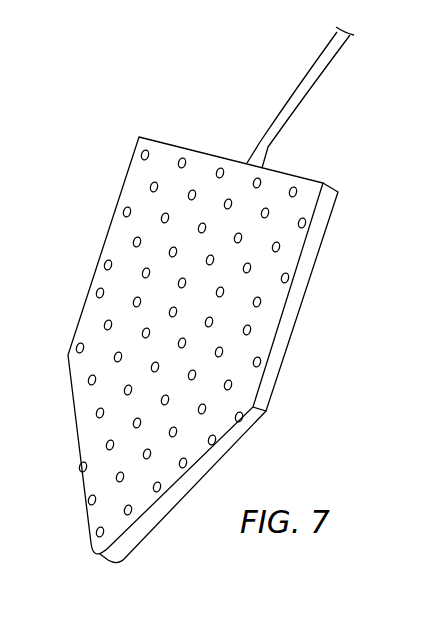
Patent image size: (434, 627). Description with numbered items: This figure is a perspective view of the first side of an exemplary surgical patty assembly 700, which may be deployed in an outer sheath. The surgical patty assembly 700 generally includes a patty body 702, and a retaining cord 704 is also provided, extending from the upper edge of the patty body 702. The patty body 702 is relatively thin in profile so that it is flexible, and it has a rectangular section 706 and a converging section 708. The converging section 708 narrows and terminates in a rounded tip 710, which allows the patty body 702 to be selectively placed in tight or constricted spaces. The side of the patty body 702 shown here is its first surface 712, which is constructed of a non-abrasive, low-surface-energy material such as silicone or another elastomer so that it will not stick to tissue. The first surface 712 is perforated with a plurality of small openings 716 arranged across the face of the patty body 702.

The surgical patty assembly 700 is at (289, 409).
The patty body 702 is at (88, 288).
The retaining cord 704 is at (297, 105).
The rectangular section 706 is at (235, 308).
The converging section 708 is at (137, 555).
The rounded tip 710 is at (103, 553).
The first surface 712 is at (127, 375).
The small openings 716 is at (132, 240).